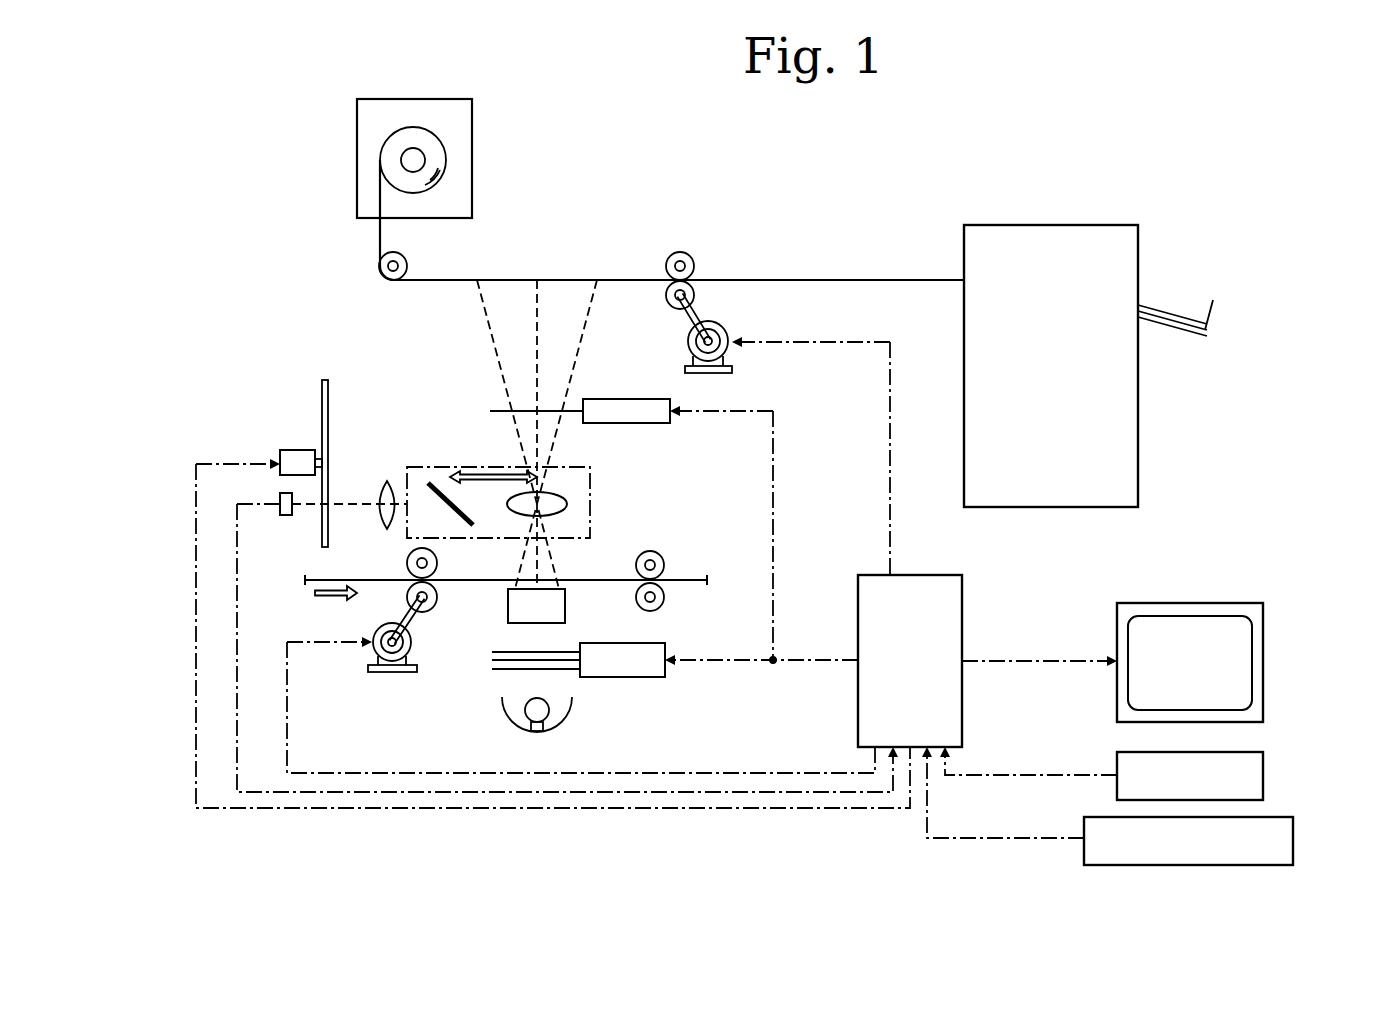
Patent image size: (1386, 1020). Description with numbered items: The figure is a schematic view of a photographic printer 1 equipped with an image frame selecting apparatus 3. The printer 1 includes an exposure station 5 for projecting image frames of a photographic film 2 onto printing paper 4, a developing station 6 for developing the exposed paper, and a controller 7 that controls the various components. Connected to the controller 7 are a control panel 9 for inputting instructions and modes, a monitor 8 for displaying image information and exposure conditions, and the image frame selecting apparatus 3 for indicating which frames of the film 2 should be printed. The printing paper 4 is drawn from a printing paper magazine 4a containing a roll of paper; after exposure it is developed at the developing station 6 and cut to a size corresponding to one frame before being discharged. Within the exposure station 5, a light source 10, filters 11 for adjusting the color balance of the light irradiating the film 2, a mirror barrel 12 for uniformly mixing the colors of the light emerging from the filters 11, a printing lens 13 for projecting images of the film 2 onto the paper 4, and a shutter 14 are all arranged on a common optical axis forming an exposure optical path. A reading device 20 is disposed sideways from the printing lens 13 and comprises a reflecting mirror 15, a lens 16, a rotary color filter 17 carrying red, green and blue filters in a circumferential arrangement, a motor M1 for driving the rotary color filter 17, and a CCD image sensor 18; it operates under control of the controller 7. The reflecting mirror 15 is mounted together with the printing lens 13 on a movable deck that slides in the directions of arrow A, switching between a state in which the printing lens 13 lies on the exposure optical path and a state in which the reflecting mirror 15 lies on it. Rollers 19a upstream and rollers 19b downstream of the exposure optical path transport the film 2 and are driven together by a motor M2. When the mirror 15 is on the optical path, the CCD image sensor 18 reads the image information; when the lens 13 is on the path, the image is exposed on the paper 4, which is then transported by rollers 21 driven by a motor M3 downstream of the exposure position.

The photographic printer 1 is at (637, 822).
The photographic film 2 is at (357, 578).
The image frame selecting apparatus 3 is at (1293, 838).
The printing paper 4 is at (380, 244).
The printing paper magazine 4a is at (472, 127).
The exposure station 5 is at (466, 690).
The developing station 6 is at (1050, 225).
The controller 7 is at (962, 605).
The monitor 8 is at (1258, 603).
The control panel 9 is at (1263, 775).
The light source 10 is at (565, 715).
The filters 11 is at (505, 650).
The mirror barrel 12 is at (565, 608).
The printing lens 13 is at (567, 502).
The shutter 14 is at (583, 399).
The reflecting mirror 15 is at (433, 482).
The lens 16 is at (387, 481).
The rotary color filter 17 is at (328, 392).
The CCD image sensor 18 is at (285, 516).
The rollers 19a is at (433, 603).
The rollers 19b is at (664, 552).
The reading device 20 is at (289, 440).
The rollers 21 is at (693, 254).
The motor M1 is at (280, 453).
The motor M2 is at (380, 673).
The motor M3 is at (730, 331).
The arrow A is at (495, 467).